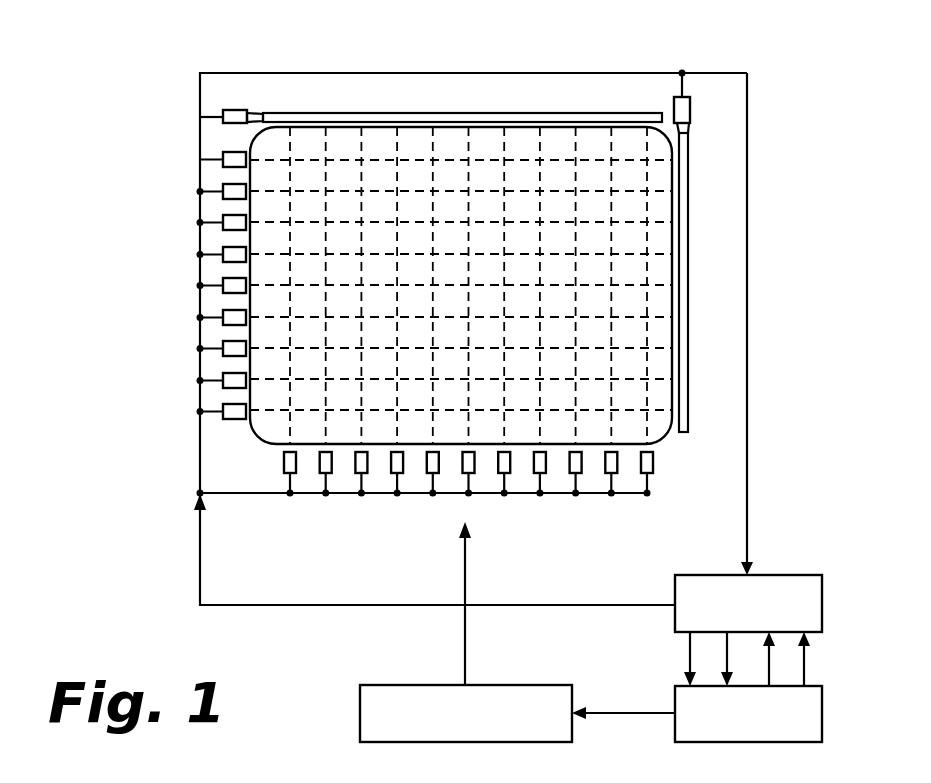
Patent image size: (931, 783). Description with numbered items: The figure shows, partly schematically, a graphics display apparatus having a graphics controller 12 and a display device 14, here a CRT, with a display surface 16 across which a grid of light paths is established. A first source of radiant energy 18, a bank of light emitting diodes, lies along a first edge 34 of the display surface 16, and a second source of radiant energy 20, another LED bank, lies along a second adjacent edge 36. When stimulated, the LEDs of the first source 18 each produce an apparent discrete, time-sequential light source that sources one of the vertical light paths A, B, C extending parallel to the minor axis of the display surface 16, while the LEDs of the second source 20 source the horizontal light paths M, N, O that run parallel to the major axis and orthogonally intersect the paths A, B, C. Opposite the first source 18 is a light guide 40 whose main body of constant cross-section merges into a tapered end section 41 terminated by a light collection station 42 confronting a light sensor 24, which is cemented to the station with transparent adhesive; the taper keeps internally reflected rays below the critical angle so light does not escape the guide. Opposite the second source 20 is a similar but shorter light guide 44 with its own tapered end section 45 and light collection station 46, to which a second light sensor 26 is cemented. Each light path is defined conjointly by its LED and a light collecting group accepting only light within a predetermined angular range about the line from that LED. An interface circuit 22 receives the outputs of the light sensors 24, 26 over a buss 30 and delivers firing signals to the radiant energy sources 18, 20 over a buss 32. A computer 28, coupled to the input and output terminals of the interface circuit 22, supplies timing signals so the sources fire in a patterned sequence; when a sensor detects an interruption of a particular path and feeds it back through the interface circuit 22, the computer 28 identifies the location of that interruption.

The graphics controller 12 is at (550, 685).
The display device 14 is at (256, 434).
The display surface 16 is at (312, 392).
The first source of radiant energy 18 is at (478, 497).
The second source of radiant energy 20 is at (199, 333).
The interface circuit 22 is at (802, 575).
The light sensor 24 is at (223, 117).
The light sensor 26 is at (690, 100).
The computer 28 is at (822, 713).
The buss 30 is at (747, 258).
The buss 32 is at (623, 603).
The first edge 34 is at (418, 445).
The second edge 36 is at (250, 365).
The light guide 40 is at (392, 112).
The tapered end section 41 is at (255, 114).
The light collection station 42 is at (232, 110).
The light guide 44 is at (688, 308).
The tapered end section 45 is at (690, 129).
The light collection station 46 is at (690, 113).
The light path A is at (643, 148).
The light path B is at (610, 148).
The light path C is at (572, 148).
The light path M is at (652, 162).
The light path N is at (655, 193).
The light path O is at (660, 225).